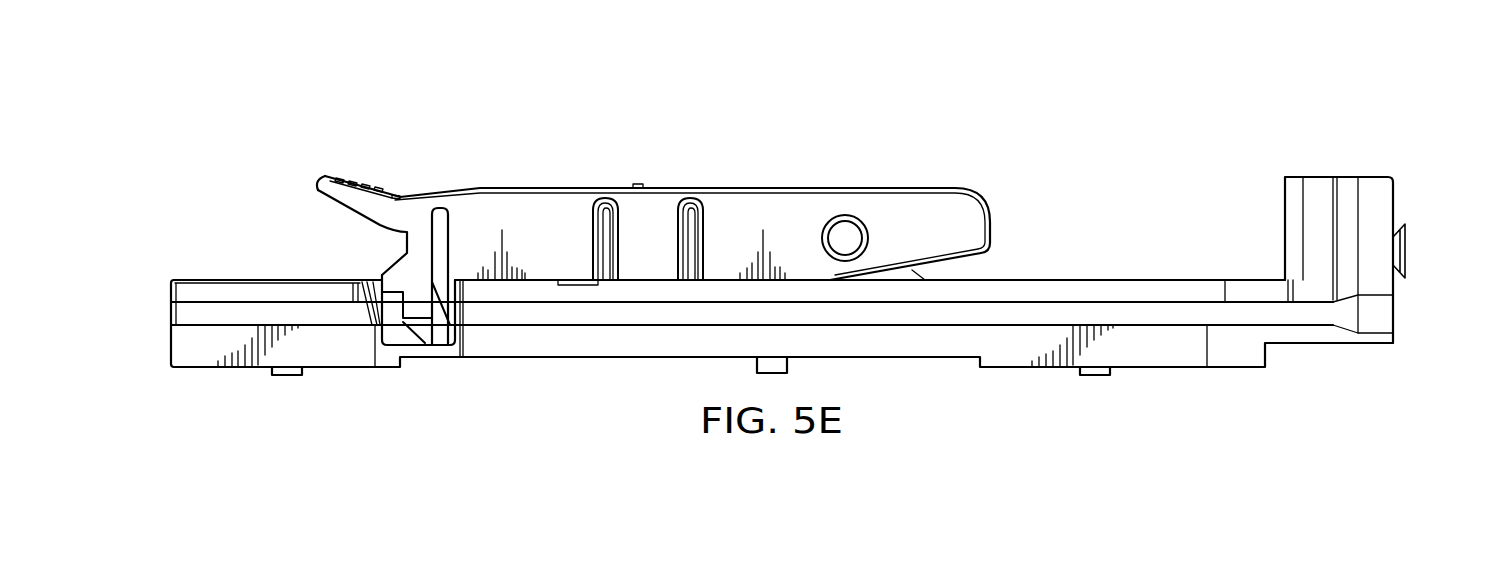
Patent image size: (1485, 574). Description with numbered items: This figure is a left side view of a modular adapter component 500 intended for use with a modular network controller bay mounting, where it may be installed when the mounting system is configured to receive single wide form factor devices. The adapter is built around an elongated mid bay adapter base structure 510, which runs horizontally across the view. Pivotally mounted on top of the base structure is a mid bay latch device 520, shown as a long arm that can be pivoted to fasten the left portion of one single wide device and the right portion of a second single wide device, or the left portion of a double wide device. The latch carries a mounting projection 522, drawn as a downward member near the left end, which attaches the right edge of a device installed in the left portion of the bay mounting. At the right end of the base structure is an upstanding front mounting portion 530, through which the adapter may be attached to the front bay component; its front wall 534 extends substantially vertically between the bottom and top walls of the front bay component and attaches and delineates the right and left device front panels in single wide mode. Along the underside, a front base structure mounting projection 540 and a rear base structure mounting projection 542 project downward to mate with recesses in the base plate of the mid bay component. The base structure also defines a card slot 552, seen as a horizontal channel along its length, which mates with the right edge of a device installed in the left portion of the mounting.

The modular adapter component 500 is at (1093, 128).
The mid bay adapter base structure 510 is at (144, 261).
The mid bay latch device 520 is at (548, 187).
The mounting projection 522 is at (410, 335).
The front mounting portion 530 is at (1382, 157).
The front wall 534 is at (1395, 203).
The front base structure mounting projection 540 is at (1147, 368).
The rear base structure mounting projection 542 is at (340, 368).
The card slot 552 is at (598, 315).